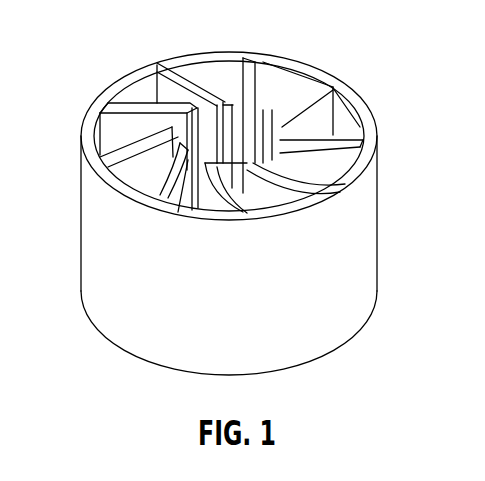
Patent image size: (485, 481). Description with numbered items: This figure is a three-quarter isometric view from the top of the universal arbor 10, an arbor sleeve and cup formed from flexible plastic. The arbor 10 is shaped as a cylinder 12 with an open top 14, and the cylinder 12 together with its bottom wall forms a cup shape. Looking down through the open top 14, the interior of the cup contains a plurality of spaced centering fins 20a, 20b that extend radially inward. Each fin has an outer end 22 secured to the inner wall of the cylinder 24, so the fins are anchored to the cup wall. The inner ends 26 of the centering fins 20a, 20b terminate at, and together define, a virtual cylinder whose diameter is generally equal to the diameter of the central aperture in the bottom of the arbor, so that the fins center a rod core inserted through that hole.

The universal arbor 10 is at (347, 62).
The cylinder 12 is at (287, 286).
The open top 14 is at (213, 82).
The centering fin 20a is at (113, 128).
The centering fin 20b is at (180, 200).
The outer ends of the centering fins 22 is at (103, 108).
The inner wall of the cylinder 24 is at (277, 101).
The inner ends of the centering fins 26 is at (157, 70).